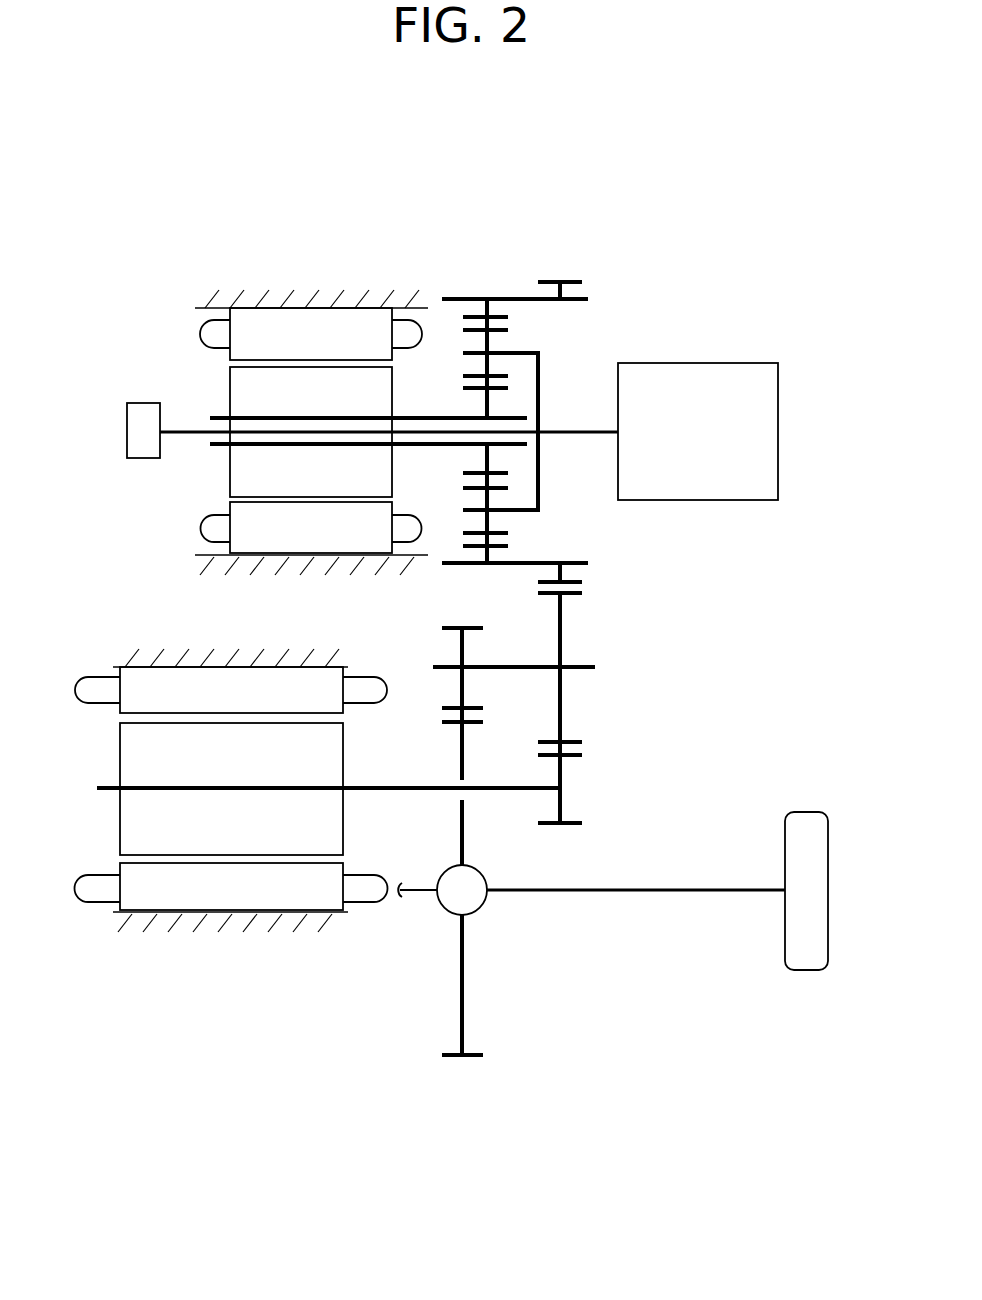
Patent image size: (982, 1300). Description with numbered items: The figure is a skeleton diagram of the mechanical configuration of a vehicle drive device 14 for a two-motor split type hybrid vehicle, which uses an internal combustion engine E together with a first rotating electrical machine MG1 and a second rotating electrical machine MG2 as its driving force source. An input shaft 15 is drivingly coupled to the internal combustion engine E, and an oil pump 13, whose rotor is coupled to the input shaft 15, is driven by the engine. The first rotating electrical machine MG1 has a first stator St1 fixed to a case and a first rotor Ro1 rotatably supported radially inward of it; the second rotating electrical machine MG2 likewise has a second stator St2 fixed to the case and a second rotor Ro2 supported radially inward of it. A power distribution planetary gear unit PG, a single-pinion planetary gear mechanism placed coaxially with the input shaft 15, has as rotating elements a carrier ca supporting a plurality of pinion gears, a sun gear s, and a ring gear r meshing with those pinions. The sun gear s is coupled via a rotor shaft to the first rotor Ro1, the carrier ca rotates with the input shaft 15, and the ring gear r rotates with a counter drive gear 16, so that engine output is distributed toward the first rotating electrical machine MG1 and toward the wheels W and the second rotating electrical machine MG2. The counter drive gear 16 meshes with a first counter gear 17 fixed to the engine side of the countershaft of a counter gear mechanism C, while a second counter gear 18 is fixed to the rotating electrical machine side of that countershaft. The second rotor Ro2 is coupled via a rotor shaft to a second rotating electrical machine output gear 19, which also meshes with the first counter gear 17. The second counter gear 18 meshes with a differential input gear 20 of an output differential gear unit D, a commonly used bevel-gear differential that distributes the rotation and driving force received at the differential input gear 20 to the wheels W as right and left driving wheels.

The oil pump 13 is at (143, 403).
The vehicle drive device 14 is at (657, 234).
The input shaft 15 is at (575, 429).
The counter drive gear 16 is at (583, 580).
The first counter gear 17 is at (565, 631).
The second counter gear 18 is at (456, 647).
The second rotating electrical machine output gear 19 is at (567, 802).
The differential input gear 20 is at (457, 1062).
The power distribution planetary gear unit PG is at (471, 272).
The ring gear r is at (497, 312).
The carrier ca is at (520, 352).
The sun gear s is at (472, 473).
The internal combustion engine E is at (697, 363).
The first rotating electrical machine MG1 is at (176, 341).
The second rotating electrical machine MG2 is at (103, 651).
The first stator St1 is at (311, 430).
The first rotor Ro1 is at (368, 432).
The second stator St2 is at (231, 788).
The second rotor Ro2 is at (328, 789).
The counter gear mechanism C is at (585, 704).
The output differential gear unit D is at (476, 900).
The wheels W is at (806, 812).